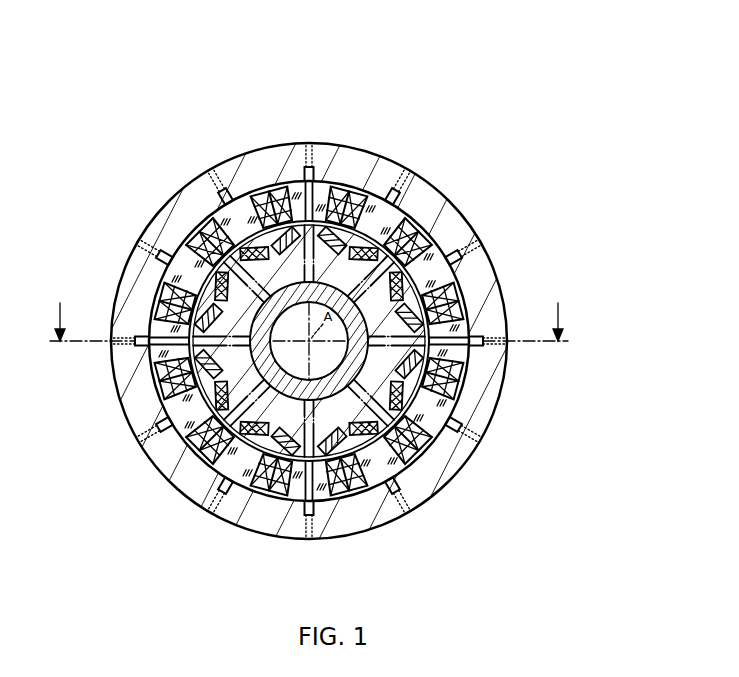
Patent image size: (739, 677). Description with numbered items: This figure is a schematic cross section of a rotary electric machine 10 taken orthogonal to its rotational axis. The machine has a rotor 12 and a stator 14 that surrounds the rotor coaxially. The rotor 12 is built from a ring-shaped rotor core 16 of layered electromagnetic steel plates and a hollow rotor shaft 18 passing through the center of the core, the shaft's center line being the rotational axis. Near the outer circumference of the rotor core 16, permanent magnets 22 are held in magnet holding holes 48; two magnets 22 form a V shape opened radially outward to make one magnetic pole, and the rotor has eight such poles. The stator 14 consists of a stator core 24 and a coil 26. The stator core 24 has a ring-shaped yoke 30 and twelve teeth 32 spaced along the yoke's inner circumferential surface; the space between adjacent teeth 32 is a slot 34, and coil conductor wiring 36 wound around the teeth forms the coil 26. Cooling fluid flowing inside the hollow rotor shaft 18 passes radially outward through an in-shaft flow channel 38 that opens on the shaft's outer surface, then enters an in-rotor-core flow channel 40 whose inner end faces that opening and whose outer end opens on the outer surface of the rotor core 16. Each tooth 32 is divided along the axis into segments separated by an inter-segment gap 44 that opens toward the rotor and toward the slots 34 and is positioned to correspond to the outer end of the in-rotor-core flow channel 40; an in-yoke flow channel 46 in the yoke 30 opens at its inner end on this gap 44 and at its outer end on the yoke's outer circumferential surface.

The rotary electric machine 10 is at (506, 121).
The rotor 12 is at (388, 256).
The stator 14 is at (460, 210).
The rotor core 16 is at (372, 230).
The rotor shaft 18 is at (323, 287).
The permanent magnets 22 is at (442, 265).
The stator core 24 is at (460, 232).
The coil 26 is at (455, 292).
The yoke 30 is at (495, 300).
The teeth 32 is at (457, 338).
The slot 34 is at (463, 373).
The coil conductor wiring 36 is at (455, 393).
The in-shaft flow channel 38 is at (446, 427).
The in-rotor-core flow channel 40 is at (442, 439).
The inter-segment gap 44 is at (389, 468).
The in-yoke flow channel 46 is at (400, 485).
The magnet holding hole 48 is at (225, 467).